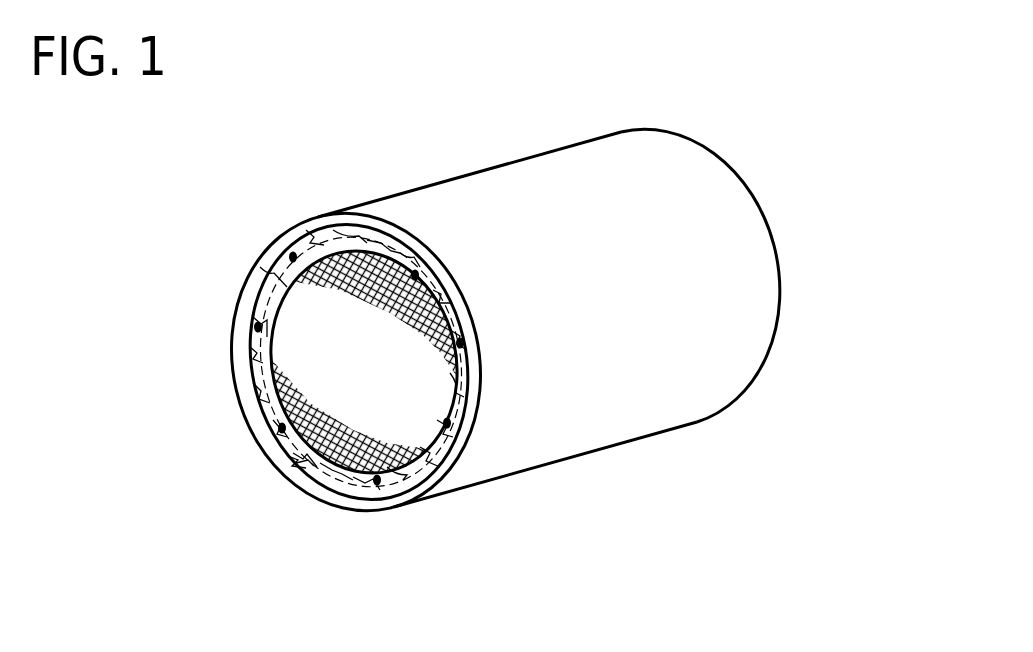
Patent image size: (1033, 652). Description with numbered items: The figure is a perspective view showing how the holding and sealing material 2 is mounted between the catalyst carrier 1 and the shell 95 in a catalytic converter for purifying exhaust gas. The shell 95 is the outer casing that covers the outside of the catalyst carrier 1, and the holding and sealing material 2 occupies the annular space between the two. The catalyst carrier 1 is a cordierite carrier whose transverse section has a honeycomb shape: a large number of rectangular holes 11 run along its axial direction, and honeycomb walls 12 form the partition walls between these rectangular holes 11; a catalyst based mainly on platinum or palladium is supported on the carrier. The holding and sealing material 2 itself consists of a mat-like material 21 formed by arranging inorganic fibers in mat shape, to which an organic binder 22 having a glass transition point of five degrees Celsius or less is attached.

The catalyst carrier 1 is at (322, 383).
The rectangular holes 11 is at (443, 306).
The honeycomb walls 12 is at (437, 362).
The holding and sealing material 2 is at (397, 238).
The mat-like material 21 is at (294, 460).
The organic binder 22 is at (290, 256).
The shell 95 is at (367, 503).